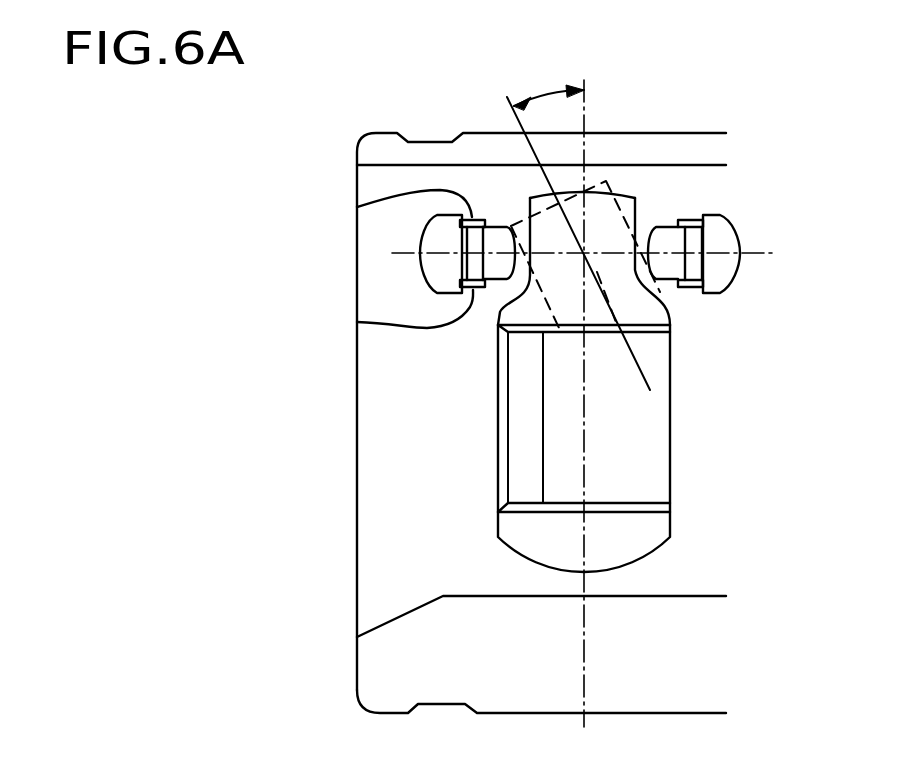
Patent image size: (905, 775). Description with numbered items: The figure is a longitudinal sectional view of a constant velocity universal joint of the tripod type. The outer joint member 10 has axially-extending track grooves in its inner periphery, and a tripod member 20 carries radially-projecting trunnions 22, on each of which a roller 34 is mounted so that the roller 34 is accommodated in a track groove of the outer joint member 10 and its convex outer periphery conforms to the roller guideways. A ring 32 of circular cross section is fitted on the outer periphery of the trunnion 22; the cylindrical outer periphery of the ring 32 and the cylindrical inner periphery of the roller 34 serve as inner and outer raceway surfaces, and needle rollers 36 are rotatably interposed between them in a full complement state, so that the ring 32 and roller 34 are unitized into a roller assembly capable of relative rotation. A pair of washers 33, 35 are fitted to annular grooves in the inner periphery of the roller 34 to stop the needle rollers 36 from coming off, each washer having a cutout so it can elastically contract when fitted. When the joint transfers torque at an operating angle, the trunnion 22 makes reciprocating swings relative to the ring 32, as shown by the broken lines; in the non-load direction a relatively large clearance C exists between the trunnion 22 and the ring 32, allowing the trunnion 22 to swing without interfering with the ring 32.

The outer joint member 10 is at (385, 134).
The tripod member 20 is at (660, 532).
The trunnion 22 is at (634, 197).
The ring 32 is at (663, 237).
The washer 33 is at (357, 207).
The roller 34 is at (725, 232).
The washer 35 is at (357, 322).
The needle rollers 36 is at (458, 267).
The clearance C is at (517, 230).